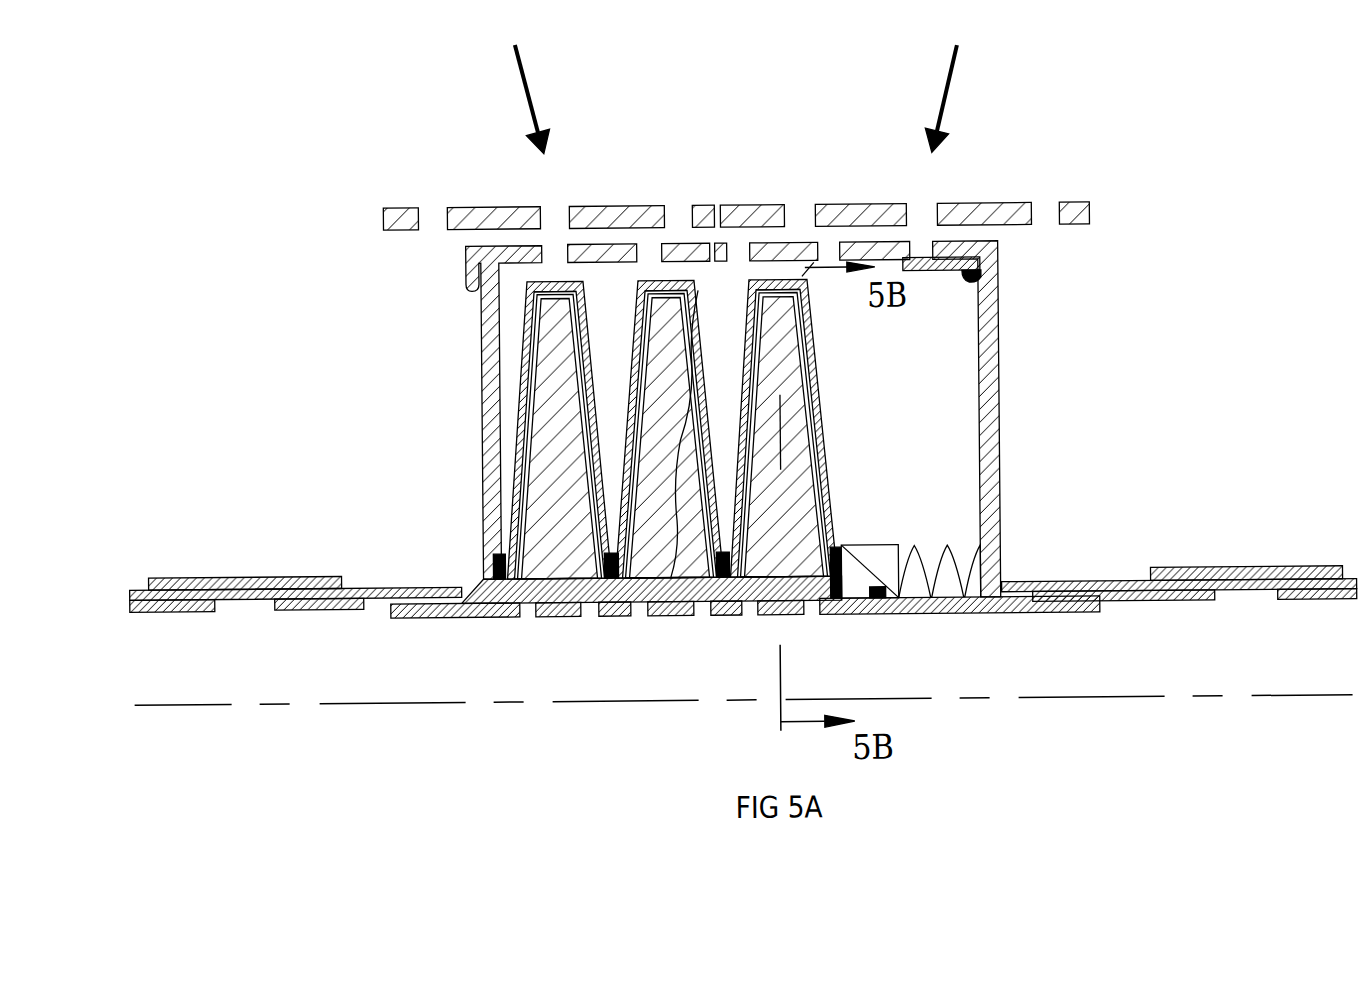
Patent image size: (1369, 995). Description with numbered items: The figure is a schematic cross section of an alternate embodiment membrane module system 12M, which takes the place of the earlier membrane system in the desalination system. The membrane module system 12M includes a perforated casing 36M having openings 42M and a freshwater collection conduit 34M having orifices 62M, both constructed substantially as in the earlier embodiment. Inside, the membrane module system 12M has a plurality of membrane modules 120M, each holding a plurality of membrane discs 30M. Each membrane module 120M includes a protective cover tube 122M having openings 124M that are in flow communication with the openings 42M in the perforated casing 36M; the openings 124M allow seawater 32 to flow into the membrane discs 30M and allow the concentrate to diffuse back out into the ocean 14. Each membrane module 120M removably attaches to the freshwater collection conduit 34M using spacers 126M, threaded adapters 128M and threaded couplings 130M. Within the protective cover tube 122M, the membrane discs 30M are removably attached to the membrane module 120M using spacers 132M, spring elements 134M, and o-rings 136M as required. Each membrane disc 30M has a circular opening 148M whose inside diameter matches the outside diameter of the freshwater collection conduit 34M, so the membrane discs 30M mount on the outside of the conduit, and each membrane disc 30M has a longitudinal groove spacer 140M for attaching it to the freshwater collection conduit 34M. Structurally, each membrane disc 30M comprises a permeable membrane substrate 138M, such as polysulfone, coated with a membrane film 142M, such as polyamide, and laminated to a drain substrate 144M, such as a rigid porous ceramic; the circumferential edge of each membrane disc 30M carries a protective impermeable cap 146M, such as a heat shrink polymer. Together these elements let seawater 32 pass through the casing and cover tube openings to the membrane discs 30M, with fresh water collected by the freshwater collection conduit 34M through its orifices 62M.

The ocean 14 is at (760, 51).
The seawater 32 is at (540, 81).
The membrane module system 12M is at (403, 158).
The openings 42M is at (1045, 208).
The perforated casing 36M is at (1077, 208).
The protective cover tube 122M is at (592, 242).
The openings 124M is at (740, 256).
The permeable membrane substrate 138M is at (500, 489).
The membrane module 120M is at (1010, 265).
The spacers 126M is at (1032, 589).
The membrane film 142M is at (521, 370).
The protective impermeable cap 146M is at (528, 291).
The membrane discs 30M is at (511, 416).
The drain substrate 144M is at (496, 546).
The spacers 132M is at (858, 547).
The o-rings 136M is at (839, 547).
The spring elements 134M is at (983, 600).
The threaded adapters 128M is at (1148, 599).
The threaded couplings 130M is at (1249, 569).
The freshwater collection conduit 34M is at (555, 614).
The circular opening 148M is at (587, 601).
The longitudinal groove spacer 140M is at (631, 601).
The orifices 62M is at (806, 601).